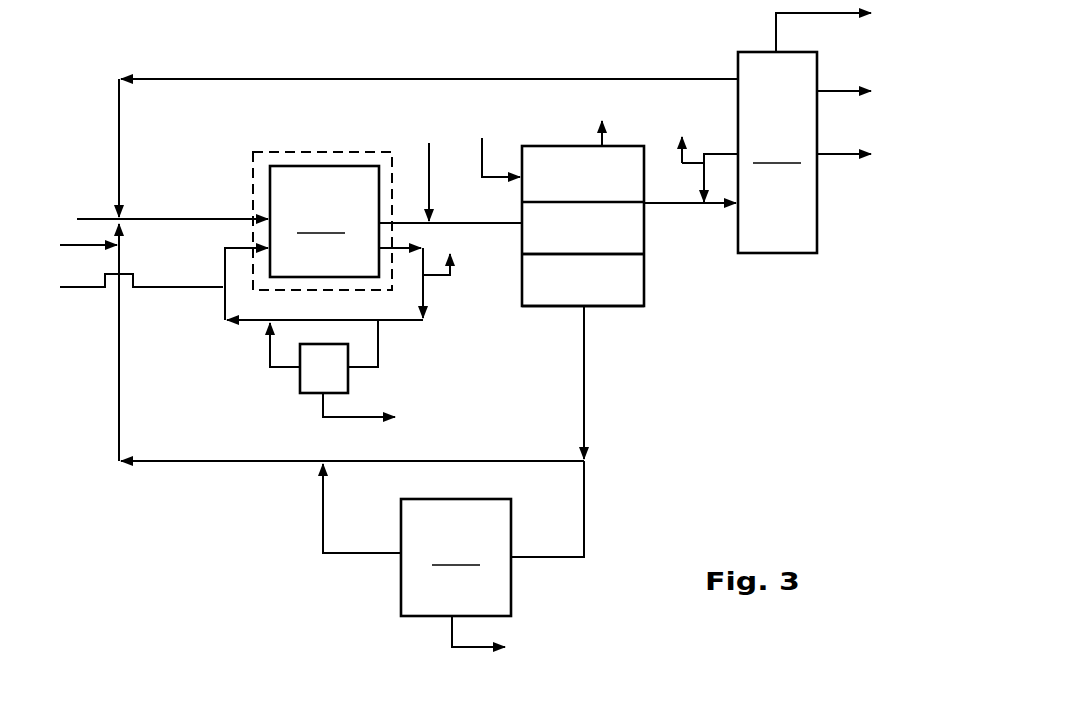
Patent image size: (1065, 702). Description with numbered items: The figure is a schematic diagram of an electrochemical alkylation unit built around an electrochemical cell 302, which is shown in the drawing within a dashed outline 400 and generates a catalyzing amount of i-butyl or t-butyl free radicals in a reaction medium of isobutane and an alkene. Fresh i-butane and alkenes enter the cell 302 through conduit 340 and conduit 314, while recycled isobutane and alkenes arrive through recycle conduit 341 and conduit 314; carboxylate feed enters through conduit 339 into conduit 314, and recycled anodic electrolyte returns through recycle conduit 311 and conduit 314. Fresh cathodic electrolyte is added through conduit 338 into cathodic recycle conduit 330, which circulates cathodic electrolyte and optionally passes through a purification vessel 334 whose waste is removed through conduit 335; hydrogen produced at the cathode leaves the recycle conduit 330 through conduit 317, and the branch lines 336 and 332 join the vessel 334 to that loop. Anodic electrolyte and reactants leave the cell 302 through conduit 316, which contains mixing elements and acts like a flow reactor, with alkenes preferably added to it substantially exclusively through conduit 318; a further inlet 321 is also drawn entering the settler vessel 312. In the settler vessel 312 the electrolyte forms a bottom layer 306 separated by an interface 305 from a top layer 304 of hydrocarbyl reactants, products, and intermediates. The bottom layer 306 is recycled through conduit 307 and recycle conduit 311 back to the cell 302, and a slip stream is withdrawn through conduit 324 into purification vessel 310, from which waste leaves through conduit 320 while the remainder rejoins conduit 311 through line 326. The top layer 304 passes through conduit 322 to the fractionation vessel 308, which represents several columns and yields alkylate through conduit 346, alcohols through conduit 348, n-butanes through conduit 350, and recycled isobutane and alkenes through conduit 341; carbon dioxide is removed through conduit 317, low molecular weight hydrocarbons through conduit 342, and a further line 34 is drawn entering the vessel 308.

The input line 34 is at (717, 154).
The electrochemical cell 302 is at (324, 221).
The top layer 304 is at (583, 228).
The interface 305 is at (618, 255).
The bottom layer 306 is at (583, 288).
The conduit 307 is at (584, 393).
The fractionation column vessel 308 is at (777, 152).
The purification vessel 310 is at (456, 557).
The recycle conduit 311 is at (203, 463).
The settler vessel 312 is at (569, 146).
The conduit 314 is at (184, 218).
The conduit 316 is at (470, 221).
The conduit 317 is at (450, 275).
The conduit 318 is at (429, 143).
The conduit 320 is at (448, 638).
The input signal 321 is at (482, 138).
The conduit 322 is at (670, 206).
The conduit 324 is at (586, 507).
The feedback line 326 is at (321, 520).
The recycle conduit 330 is at (427, 300).
The connection line 332 is at (380, 351).
The purification vessel 334 is at (314, 384).
The conduit 335 is at (368, 418).
The connection line 336 is at (268, 351).
The conduit 338 is at (84, 289).
The conduit 339 is at (92, 246).
The conduit 340 is at (80, 218).
The recycle conduit 341 is at (211, 77).
The conduit 342 is at (682, 163).
The conduit 346 is at (835, 17).
The conduit 348 is at (832, 93).
The conduit 350 is at (835, 156).
The dashed block 400 is at (250, 150).